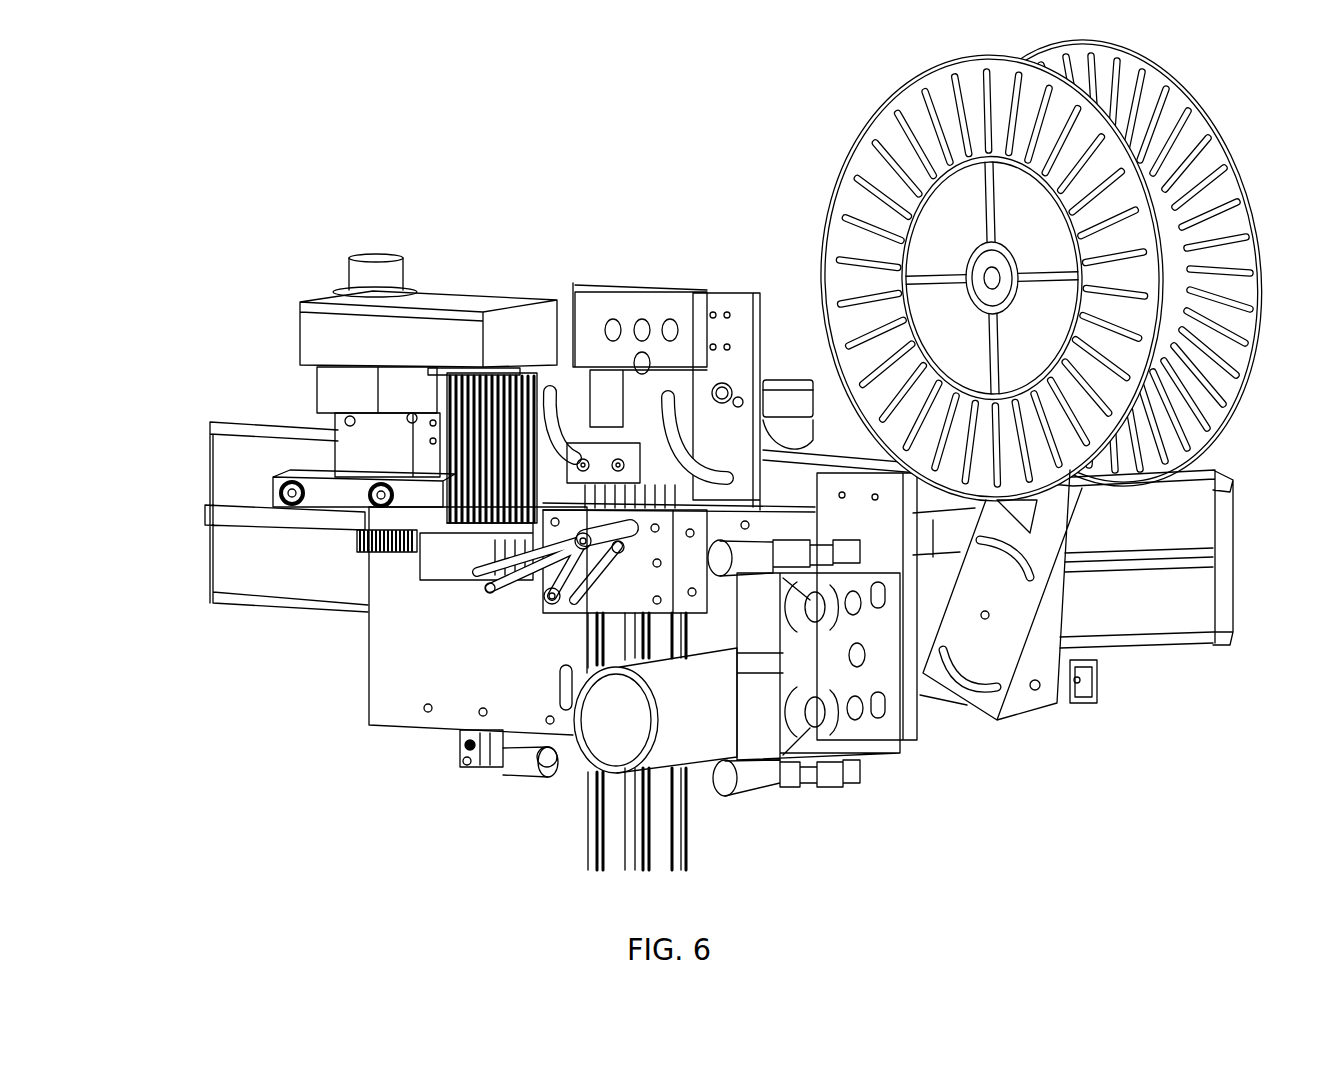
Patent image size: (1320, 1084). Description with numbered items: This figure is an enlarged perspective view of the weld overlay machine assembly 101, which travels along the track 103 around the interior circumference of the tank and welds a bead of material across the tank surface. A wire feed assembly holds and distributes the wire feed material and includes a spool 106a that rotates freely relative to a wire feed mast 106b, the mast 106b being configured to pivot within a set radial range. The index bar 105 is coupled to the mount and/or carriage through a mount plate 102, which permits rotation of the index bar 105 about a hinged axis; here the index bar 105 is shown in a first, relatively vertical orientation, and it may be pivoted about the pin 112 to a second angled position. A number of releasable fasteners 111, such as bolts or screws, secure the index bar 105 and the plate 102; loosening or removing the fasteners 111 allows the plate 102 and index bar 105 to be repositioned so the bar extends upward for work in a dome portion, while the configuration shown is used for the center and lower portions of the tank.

The weld overlay machine assembly 101 is at (310, 776).
The mount plate 102 is at (717, 305).
The track 103 is at (218, 423).
The index bar 105 is at (582, 830).
The spool 106a is at (837, 182).
The wire feed mast 106b is at (1041, 731).
The fasteners 111 is at (641, 322).
The pin 112 is at (732, 388).